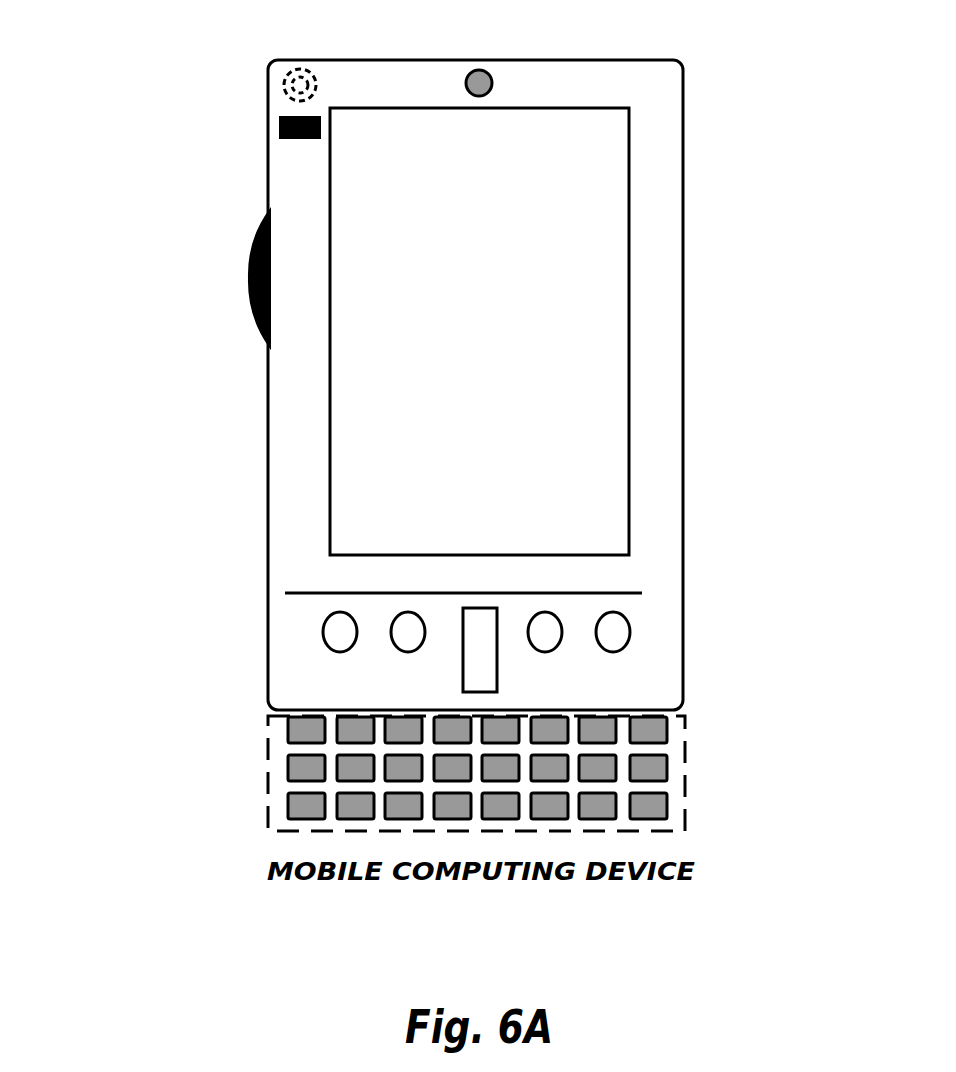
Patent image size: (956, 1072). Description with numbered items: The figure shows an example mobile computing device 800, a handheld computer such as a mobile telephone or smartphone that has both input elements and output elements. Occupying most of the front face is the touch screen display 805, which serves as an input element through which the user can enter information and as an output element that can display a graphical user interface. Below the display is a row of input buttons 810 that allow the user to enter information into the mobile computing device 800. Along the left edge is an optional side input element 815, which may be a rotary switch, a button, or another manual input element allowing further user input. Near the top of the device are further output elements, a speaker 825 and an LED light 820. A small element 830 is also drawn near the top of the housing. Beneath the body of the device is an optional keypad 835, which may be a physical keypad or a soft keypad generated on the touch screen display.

The mobile computing device 800 is at (683, 78).
The touch screen display 805 is at (356, 491).
The input buttons 810 is at (616, 645).
The side input element 815 is at (248, 288).
The LED light 820 is at (282, 120).
The speaker 825 is at (284, 78).
The camera 830 is at (490, 70).
The keypad 835 is at (268, 798).